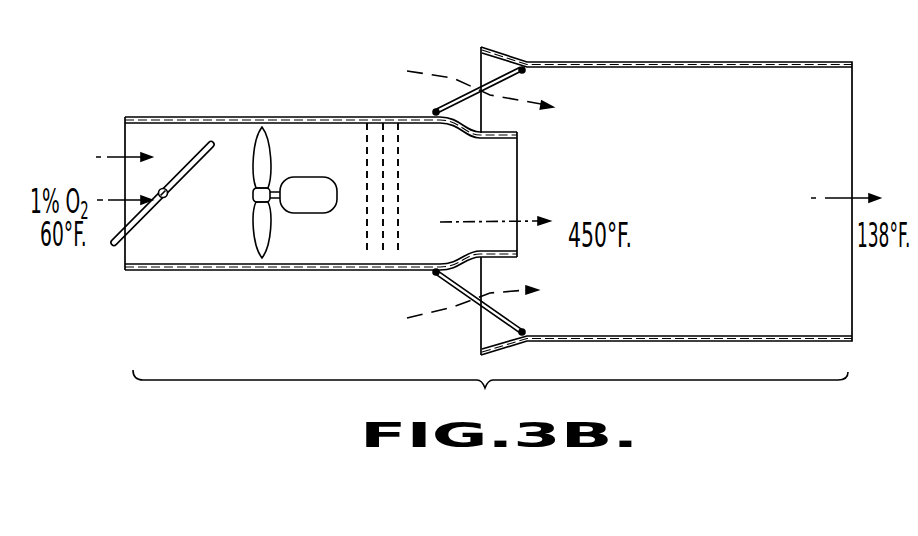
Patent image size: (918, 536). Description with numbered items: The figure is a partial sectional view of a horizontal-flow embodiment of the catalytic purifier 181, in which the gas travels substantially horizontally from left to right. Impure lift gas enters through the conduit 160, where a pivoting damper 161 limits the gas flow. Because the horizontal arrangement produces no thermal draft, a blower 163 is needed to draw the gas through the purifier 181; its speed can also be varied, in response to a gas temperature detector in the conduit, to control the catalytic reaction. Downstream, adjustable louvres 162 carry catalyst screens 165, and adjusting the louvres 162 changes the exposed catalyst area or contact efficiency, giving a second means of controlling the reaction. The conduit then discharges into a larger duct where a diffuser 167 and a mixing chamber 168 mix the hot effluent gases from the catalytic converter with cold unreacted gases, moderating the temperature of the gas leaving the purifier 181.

The conduit 160 is at (237, 268).
The damper 161 is at (135, 227).
The adjustable louvres 162 is at (382, 118).
The blower 163 is at (270, 244).
The catalyst screens 165 is at (398, 252).
The diffuser 167 is at (502, 133).
The mixing chamber 168 is at (710, 200).
The catalytic purifier 181 is at (490, 396).